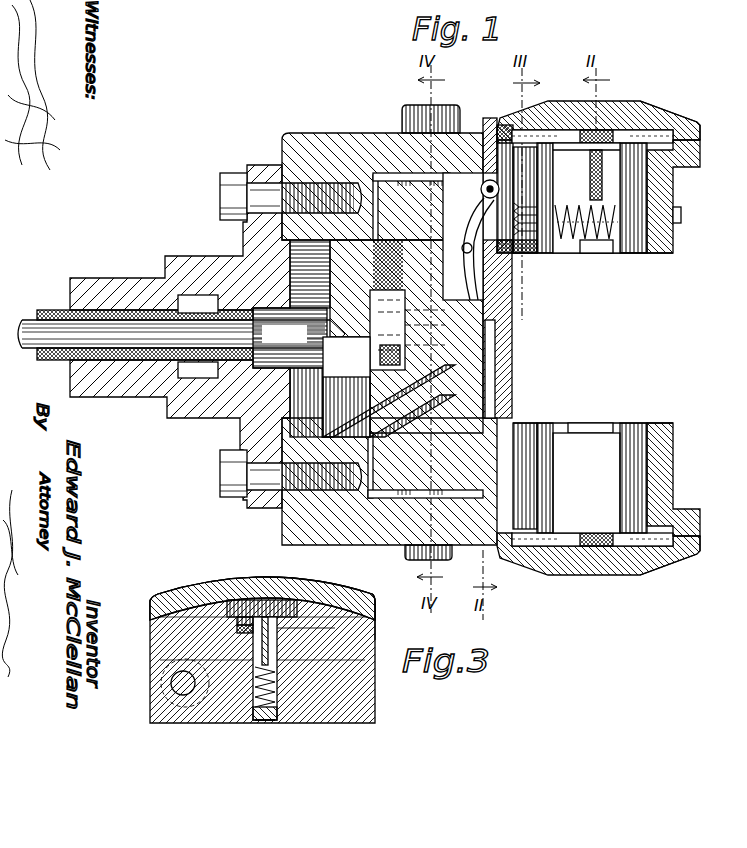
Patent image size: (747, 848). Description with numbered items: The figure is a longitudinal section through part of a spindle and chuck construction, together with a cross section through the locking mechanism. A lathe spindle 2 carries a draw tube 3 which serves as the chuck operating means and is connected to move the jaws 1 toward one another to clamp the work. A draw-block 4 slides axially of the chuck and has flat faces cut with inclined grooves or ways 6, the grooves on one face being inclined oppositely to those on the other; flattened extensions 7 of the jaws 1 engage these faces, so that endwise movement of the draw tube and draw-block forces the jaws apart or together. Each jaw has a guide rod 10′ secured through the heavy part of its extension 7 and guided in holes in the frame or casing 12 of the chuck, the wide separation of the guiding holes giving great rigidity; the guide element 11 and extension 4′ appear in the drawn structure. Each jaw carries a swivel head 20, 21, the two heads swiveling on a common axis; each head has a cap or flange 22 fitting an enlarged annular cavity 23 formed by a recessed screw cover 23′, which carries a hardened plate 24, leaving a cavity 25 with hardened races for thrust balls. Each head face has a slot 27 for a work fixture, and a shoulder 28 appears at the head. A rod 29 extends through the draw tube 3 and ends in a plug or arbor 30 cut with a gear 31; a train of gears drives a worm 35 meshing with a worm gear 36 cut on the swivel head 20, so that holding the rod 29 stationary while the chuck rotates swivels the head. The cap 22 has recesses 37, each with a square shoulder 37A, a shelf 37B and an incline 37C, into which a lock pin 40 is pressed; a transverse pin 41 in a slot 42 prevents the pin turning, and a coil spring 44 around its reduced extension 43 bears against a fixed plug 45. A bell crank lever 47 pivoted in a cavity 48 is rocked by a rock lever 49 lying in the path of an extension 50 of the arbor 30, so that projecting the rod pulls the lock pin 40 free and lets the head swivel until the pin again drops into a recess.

In FIG. 1, the jaws 1 is at (673, 191).
In FIG. 1, the lathe spindle 2 is at (143, 278).
In FIG. 1, the draw tube 3 is at (47, 310).
In FIG. 1, the draw-block 4 is at (470, 356).
In FIG. 1, the piston extension 4′ is at (410, 345).
In FIG. 1, the inclined grooves or ways 6 is at (440, 400).
In FIG. 1, the extensions of the jaws 7 is at (373, 178).
In FIG. 1, the guide rod 10′ is at (406, 112).
In FIG. 1, the cover block 11 is at (460, 135).
In FIG. 1, the frame or casing of the chuck 12 is at (302, 136).
In FIG. 1, the swivel head 20 is at (572, 189).
In FIG. 1, the swivel head 21 is at (592, 478).
In FIG. 1, the cap or flange 22 is at (650, 120).
In FIG. 3, the cap or flange 22 is at (215, 592).
In FIG. 1, the annular cavity 23 is at (700, 131).
In FIG. 3, the annular cavity 23 is at (331, 594).
In FIG. 1, the screw cover 23′ is at (620, 104).
In FIG. 1, the hardened plate 24 is at (572, 130).
In FIG. 1, the cavity 25 is at (601, 130).
In FIG. 1, the slot 27 is at (602, 252).
In FIG. 1, the shoulder 28 is at (640, 255).
In FIG. 1, the rod 29 is at (181, 334).
In FIG. 1, the plug or arbor 30 is at (291, 304).
In FIG. 1, the gear 31 is at (330, 387).
In FIG. 1, the worm 35 is at (600, 205).
In FIG. 1, the worm gear 36 is at (683, 215).
In FIG. 1, the recesses 37 is at (545, 150).
In FIG. 3, the recesses 37 is at (266, 600).
In FIG. 3, the square shoulder 37A is at (255, 600).
In FIG. 3, the shelf 37B is at (335, 628).
In FIG. 1, the incline 37C is at (727, 166).
In FIG. 3, the incline 37C is at (367, 601).
In FIG. 1, the lock pin 40 is at (502, 128).
In FIG. 3, the lock pin 40 is at (262, 655).
In FIG. 1, the transverse pin 41 is at (498, 130).
In FIG. 3, the transverse pin 41 is at (237, 620).
In FIG. 1, the slot 42 is at (490, 130).
In FIG. 3, the slot 42 is at (253, 630).
In FIG. 1, the reduced cylindrical extension 43 is at (525, 247).
In FIG. 3, the reduced cylindrical extension 43 is at (275, 692).
In FIG. 1, the coil spring 44 is at (545, 255).
In FIG. 3, the coil spring 44 is at (277, 703).
In FIG. 1, the fixed plug or anchorage 45 is at (503, 256).
In FIG. 3, the fixed plug or anchorage 45 is at (255, 719).
In FIG. 1, the bell crank lever 47 is at (470, 228).
In FIG. 1, the cavity 48 is at (481, 190).
In FIG. 1, the rock lever 49 is at (496, 322).
In FIG. 1, the extension of the arbor 50 is at (493, 345).